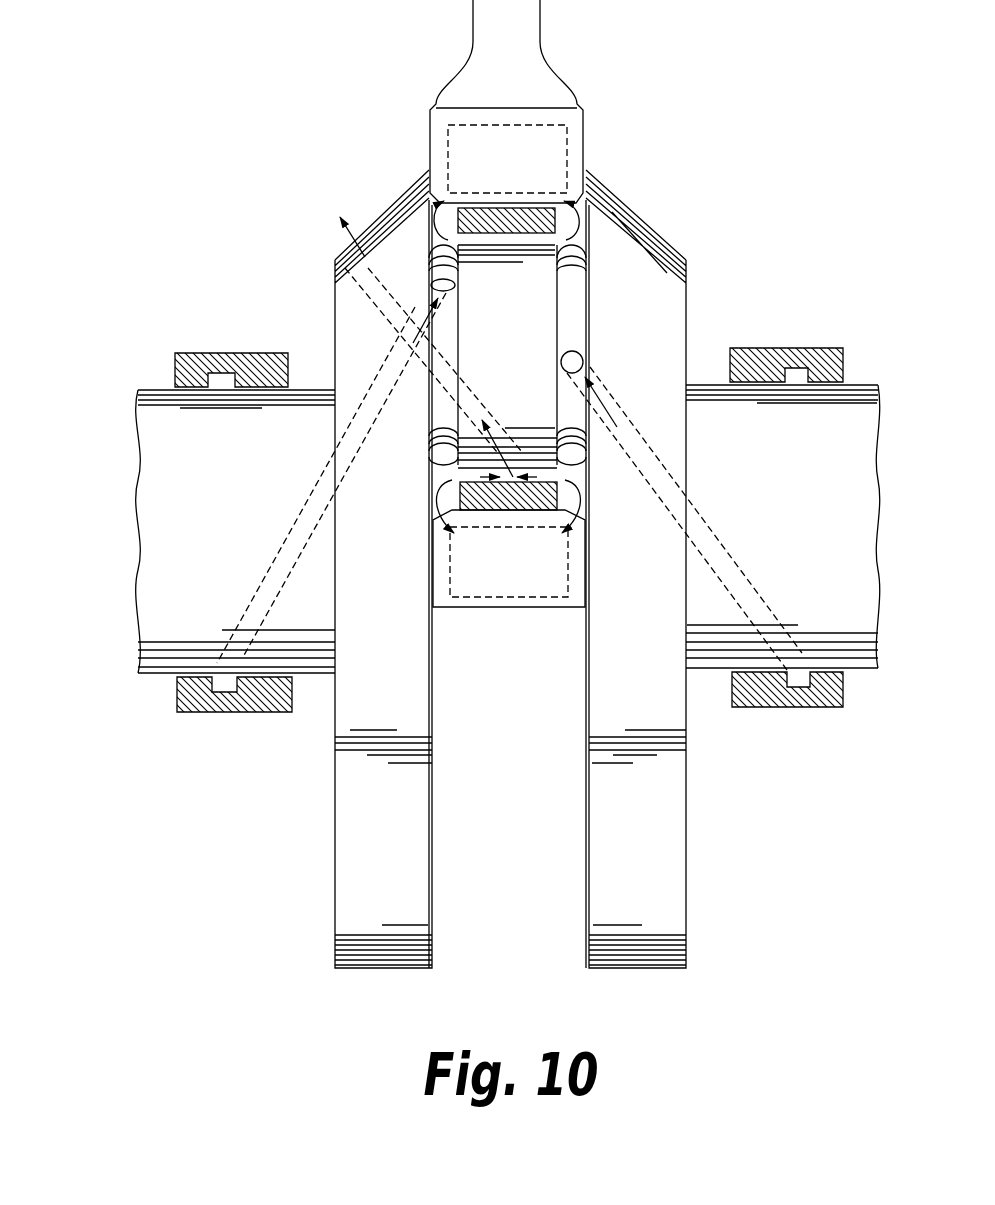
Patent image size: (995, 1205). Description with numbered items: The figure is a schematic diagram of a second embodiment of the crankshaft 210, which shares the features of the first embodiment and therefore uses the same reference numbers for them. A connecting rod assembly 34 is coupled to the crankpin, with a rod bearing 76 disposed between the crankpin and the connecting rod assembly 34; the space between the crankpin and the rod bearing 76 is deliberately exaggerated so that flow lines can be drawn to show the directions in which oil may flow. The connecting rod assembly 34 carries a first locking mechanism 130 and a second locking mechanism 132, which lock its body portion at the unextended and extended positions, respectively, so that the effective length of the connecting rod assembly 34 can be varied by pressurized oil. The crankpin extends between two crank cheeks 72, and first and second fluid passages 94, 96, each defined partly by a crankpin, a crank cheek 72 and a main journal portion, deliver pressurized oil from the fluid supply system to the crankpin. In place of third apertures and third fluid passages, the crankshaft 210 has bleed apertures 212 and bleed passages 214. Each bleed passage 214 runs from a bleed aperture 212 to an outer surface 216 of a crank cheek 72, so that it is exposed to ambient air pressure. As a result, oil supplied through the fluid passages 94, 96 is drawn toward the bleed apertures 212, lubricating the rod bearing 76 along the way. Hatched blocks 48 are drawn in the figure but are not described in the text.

The connecting rod assembly 34 is at (567, 75).
The second locking mechanism 132 is at (568, 133).
The first locking mechanism 130 is at (548, 600).
The crank cheek 72 is at (403, 187).
The rod bearing 76 is at (548, 235).
The crankshaft 210 is at (131, 685).
The mounting block 48 is at (812, 348).
The bleed passage 214 is at (387, 290).
The outer surface 216 is at (370, 213).
The first fluid passage 94 is at (252, 660).
The second fluid passage 96 is at (762, 670).
The bleed aperture 212 is at (517, 473).